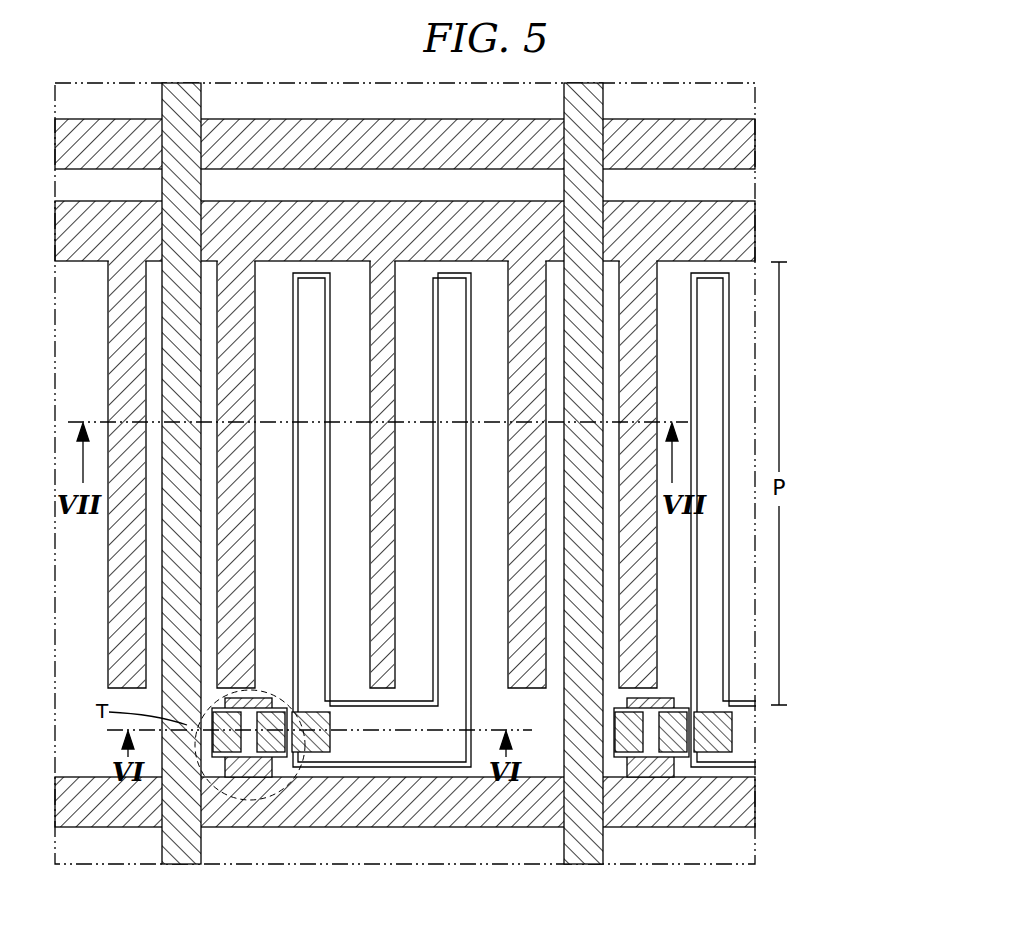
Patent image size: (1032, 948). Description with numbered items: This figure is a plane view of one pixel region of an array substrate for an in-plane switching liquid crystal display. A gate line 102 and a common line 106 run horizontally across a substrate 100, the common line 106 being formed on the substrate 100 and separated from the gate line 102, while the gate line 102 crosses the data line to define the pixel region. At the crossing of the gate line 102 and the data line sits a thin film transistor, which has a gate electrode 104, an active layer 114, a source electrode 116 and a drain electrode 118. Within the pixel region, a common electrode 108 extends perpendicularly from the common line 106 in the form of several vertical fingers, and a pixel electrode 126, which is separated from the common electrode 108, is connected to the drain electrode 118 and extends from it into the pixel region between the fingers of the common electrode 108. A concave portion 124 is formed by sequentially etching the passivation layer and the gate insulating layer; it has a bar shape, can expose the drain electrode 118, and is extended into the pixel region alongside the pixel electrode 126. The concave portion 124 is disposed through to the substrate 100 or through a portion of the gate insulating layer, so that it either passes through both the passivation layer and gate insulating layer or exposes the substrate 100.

The substrate 100 is at (405, 473).
The gate line 102 is at (748, 150).
The gate electrode 104 is at (250, 699).
The common line 106 is at (748, 232).
The common electrode 108 is at (256, 568).
The active layer 114 is at (273, 773).
The source electrode 116 is at (229, 753).
The drain electrode 118 is at (323, 752).
The concave portion 124 is at (473, 383).
The pixel electrode 126 is at (468, 533).